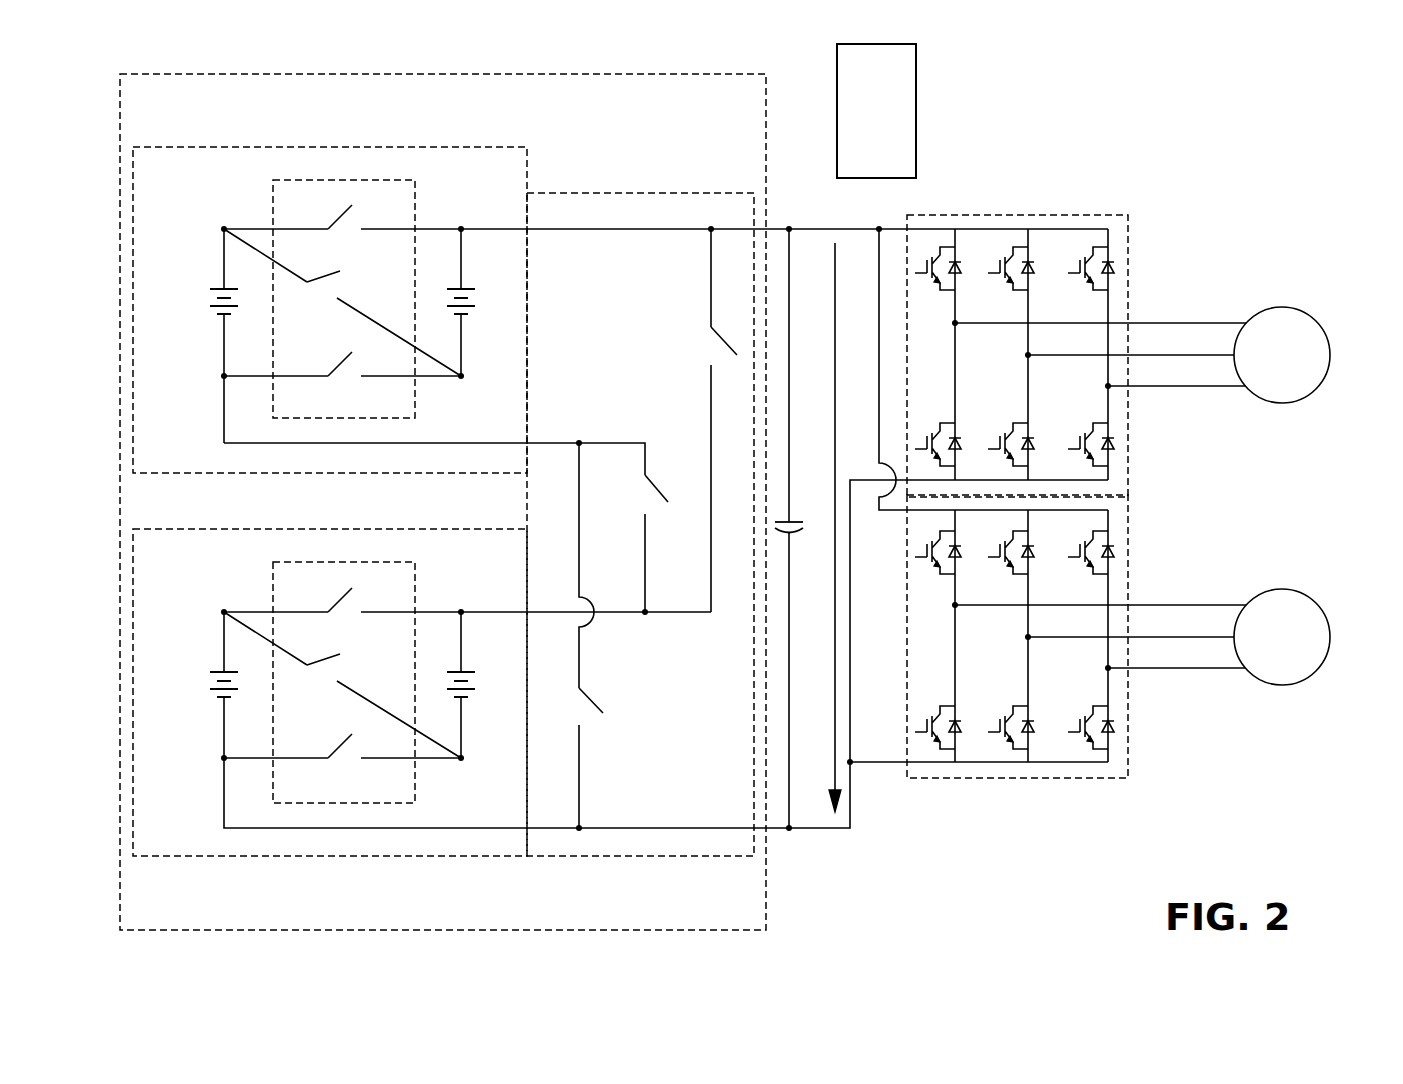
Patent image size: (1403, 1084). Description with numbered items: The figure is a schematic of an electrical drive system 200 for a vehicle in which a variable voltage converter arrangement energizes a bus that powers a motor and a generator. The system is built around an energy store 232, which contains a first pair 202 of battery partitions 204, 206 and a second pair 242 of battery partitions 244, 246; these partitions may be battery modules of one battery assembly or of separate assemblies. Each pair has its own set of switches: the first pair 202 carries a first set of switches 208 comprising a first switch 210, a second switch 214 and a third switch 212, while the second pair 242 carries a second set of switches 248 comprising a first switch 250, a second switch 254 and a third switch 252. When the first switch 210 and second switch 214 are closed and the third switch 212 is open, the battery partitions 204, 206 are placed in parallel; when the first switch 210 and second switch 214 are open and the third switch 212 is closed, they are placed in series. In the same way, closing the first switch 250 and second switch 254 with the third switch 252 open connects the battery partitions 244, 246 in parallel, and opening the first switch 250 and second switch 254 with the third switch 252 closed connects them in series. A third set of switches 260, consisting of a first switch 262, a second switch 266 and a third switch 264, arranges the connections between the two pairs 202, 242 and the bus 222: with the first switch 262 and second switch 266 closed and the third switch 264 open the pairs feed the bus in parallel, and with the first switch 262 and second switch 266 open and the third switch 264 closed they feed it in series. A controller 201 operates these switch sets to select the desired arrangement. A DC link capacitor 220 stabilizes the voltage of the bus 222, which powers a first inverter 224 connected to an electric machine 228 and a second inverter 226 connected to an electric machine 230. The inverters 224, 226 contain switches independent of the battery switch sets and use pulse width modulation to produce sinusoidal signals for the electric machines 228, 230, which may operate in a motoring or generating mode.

The electrical drive system 200 is at (1213, 185).
The controller 201 is at (766, 110).
The first pair of battery partitions 202 is at (338, 147).
The battery partition 204 is at (217, 312).
The battery partition 206 is at (470, 312).
The first set of switches 208 is at (265, 213).
The switch S1 210 is at (342, 217).
The switch S3 212 is at (322, 278).
The switch S2 214 is at (342, 364).
The DC link capacitor 220 is at (798, 513).
The bus Vdc 222 is at (835, 320).
The inverter 224 is at (1015, 215).
The inverter 226 is at (1015, 778).
The electric machine 228 is at (1311, 315).
The electric machine 230 is at (1311, 597).
The energy store 232 is at (766, 880).
The second pair of battery partitions 242 is at (329, 856).
The battery partition 244 is at (217, 699).
The battery partition 246 is at (470, 698).
The second set of switches 248 is at (265, 606).
The switch S4 250 is at (342, 600).
The switch S6 252 is at (322, 661).
The switch S5 254 is at (342, 747).
The third set of switches 260 is at (640, 193).
The switch S7 262 is at (722, 348).
The switch S9 264 is at (657, 491).
The switch S8 266 is at (594, 699).